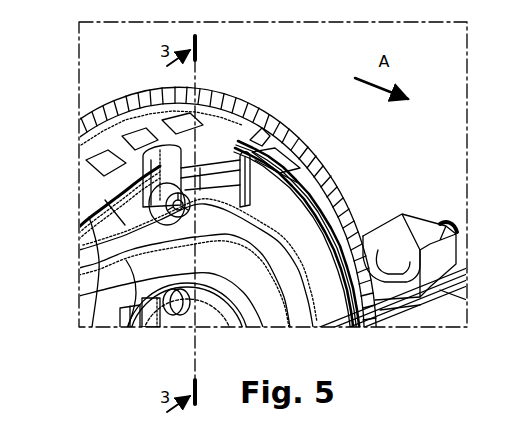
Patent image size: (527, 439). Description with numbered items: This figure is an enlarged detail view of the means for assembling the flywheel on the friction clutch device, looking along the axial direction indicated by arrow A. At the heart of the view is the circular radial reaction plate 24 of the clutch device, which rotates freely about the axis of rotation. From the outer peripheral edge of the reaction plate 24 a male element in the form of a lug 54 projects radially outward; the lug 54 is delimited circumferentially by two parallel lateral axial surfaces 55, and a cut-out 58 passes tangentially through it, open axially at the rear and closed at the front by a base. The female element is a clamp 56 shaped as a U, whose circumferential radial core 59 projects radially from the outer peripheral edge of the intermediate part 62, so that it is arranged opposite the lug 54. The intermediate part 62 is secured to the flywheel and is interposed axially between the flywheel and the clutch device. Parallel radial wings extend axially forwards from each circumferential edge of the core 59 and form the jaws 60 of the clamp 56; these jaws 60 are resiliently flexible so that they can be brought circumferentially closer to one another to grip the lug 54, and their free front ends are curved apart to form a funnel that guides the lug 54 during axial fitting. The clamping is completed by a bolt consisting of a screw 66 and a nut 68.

The reaction plate 24 is at (378, 320).
The lug 54 is at (410, 250).
The lateral axial surfaces 55 is at (405, 310).
The clamp 56 is at (207, 136).
The cut-out 58 is at (387, 275).
The core 59 is at (160, 100).
The jaws 60 is at (95, 174).
The intermediate part 62 is at (97, 313).
The screw 66 is at (256, 205).
The nut 68 is at (278, 150).